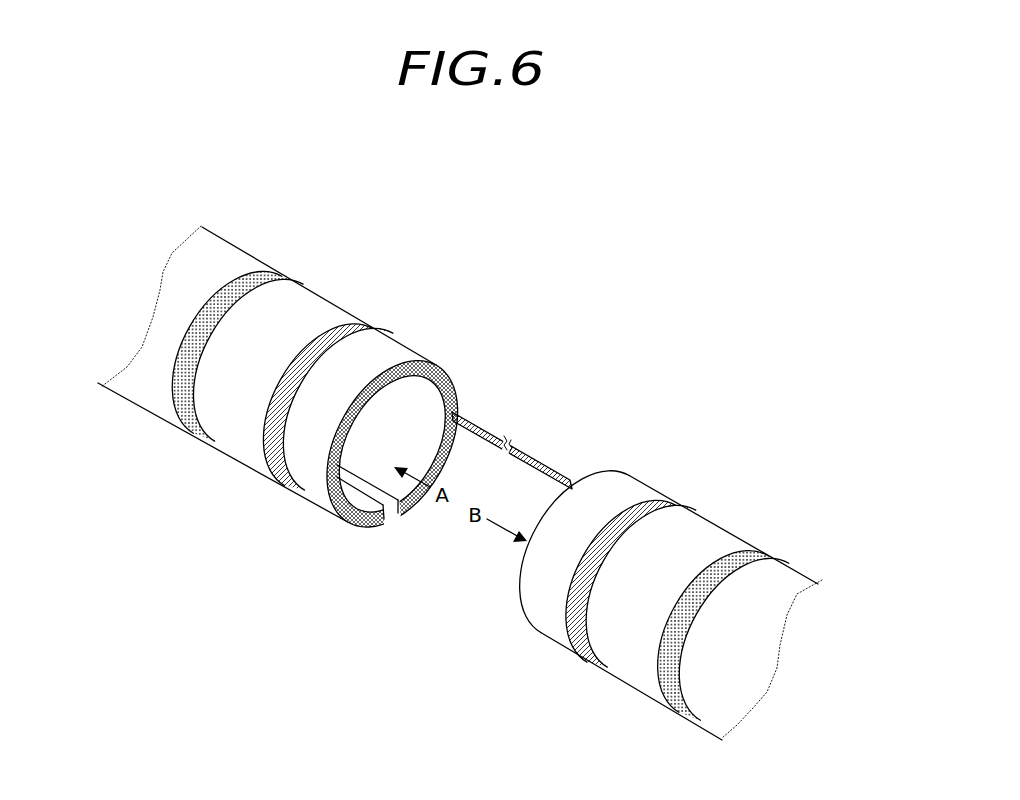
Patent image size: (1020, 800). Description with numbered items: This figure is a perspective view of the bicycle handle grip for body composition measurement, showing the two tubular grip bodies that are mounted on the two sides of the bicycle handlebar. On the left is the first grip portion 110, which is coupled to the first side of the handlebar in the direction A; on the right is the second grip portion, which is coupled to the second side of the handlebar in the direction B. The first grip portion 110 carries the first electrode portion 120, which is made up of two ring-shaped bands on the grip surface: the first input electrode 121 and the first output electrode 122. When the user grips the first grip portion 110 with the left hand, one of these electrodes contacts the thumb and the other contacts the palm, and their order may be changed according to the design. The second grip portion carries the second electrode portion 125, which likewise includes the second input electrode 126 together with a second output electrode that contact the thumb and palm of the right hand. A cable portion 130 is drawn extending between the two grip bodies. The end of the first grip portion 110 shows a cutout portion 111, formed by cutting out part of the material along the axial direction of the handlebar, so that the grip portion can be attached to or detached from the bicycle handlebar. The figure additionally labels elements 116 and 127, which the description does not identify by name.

The first grip portion 110 is at (394, 436).
The cutout portion 111 is at (393, 513).
The end face of tube 116 is at (624, 478).
The first electrode portion 120 is at (295, 346).
The first input electrode 121 is at (330, 378).
The first output electrode 122 is at (277, 268).
The second electrode portion 125 is at (687, 574).
The second input electrode 126 is at (666, 502).
The second insulating band 127 is at (725, 606).
The cable portion 130 is at (485, 431).